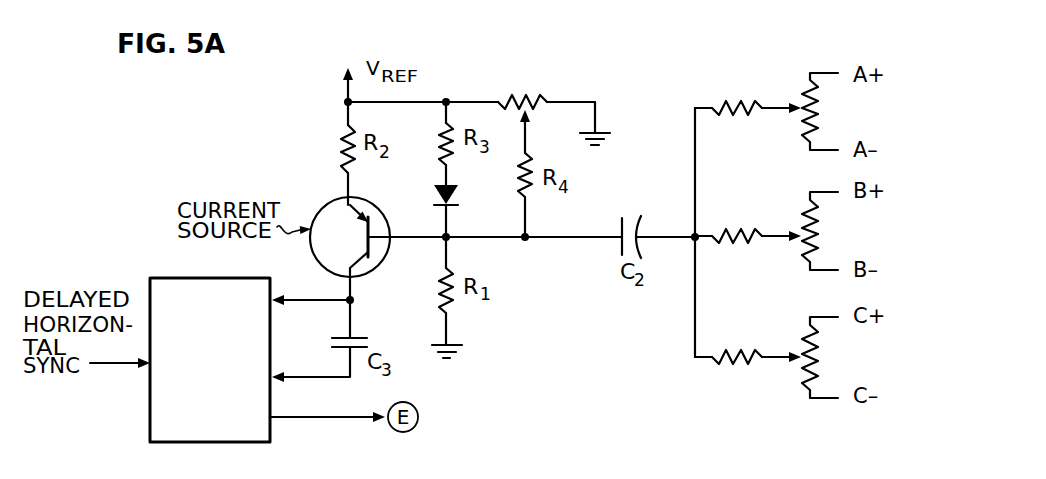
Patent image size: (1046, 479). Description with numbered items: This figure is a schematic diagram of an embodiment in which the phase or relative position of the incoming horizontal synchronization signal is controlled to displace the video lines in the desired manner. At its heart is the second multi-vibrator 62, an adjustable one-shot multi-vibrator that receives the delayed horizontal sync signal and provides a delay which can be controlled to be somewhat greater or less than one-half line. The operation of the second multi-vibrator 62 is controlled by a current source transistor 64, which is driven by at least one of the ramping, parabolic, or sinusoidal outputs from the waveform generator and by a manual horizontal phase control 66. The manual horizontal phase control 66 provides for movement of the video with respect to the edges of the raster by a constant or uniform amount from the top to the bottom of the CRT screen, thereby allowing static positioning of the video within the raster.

The second multi-vibrator 62 is at (173, 292).
The current source transistor 64 is at (366, 266).
The manual horizontal phase control 66 is at (538, 80).